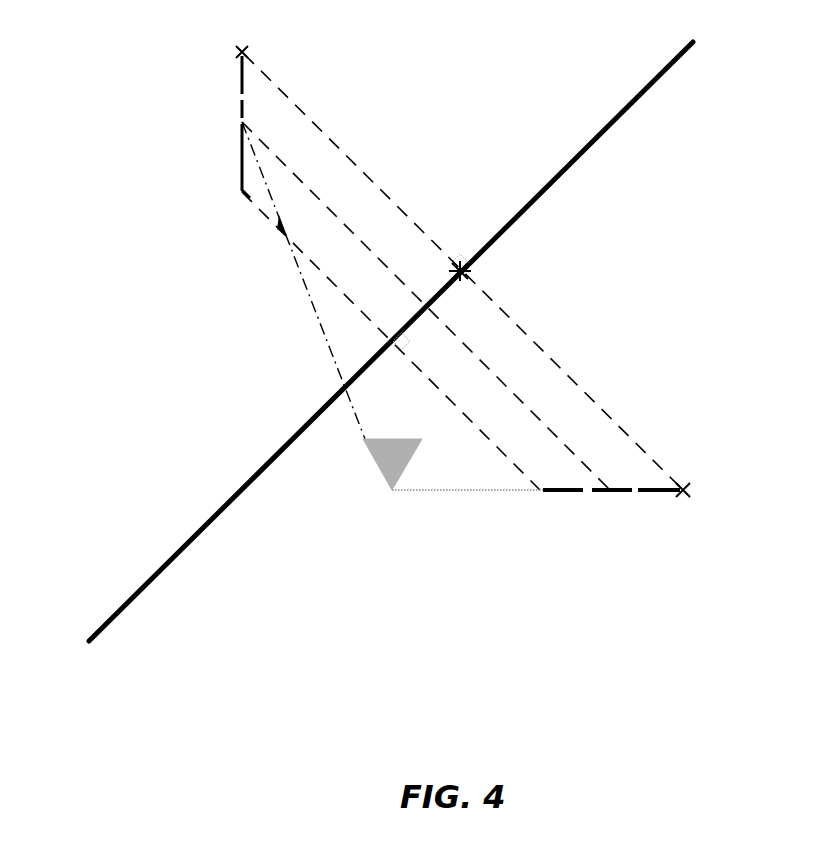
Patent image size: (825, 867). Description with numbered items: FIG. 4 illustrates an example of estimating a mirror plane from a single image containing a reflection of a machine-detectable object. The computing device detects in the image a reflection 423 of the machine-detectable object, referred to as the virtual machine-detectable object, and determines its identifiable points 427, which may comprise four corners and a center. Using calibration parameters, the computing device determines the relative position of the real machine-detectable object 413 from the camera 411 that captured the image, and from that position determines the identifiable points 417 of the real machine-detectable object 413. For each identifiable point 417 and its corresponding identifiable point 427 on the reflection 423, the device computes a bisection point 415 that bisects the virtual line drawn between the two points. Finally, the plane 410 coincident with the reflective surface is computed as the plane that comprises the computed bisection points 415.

The plane 410 is at (623, 113).
The camera 411 is at (380, 473).
The real machine-detectable object 413 is at (611, 494).
The bisection point 415 is at (470, 279).
The identifiable points of the real machine-detectable object 417 is at (686, 492).
The reflection of a machine-detectable object 423 is at (236, 118).
The identifiable points of the virtual machine-detectable object 427 is at (252, 56).